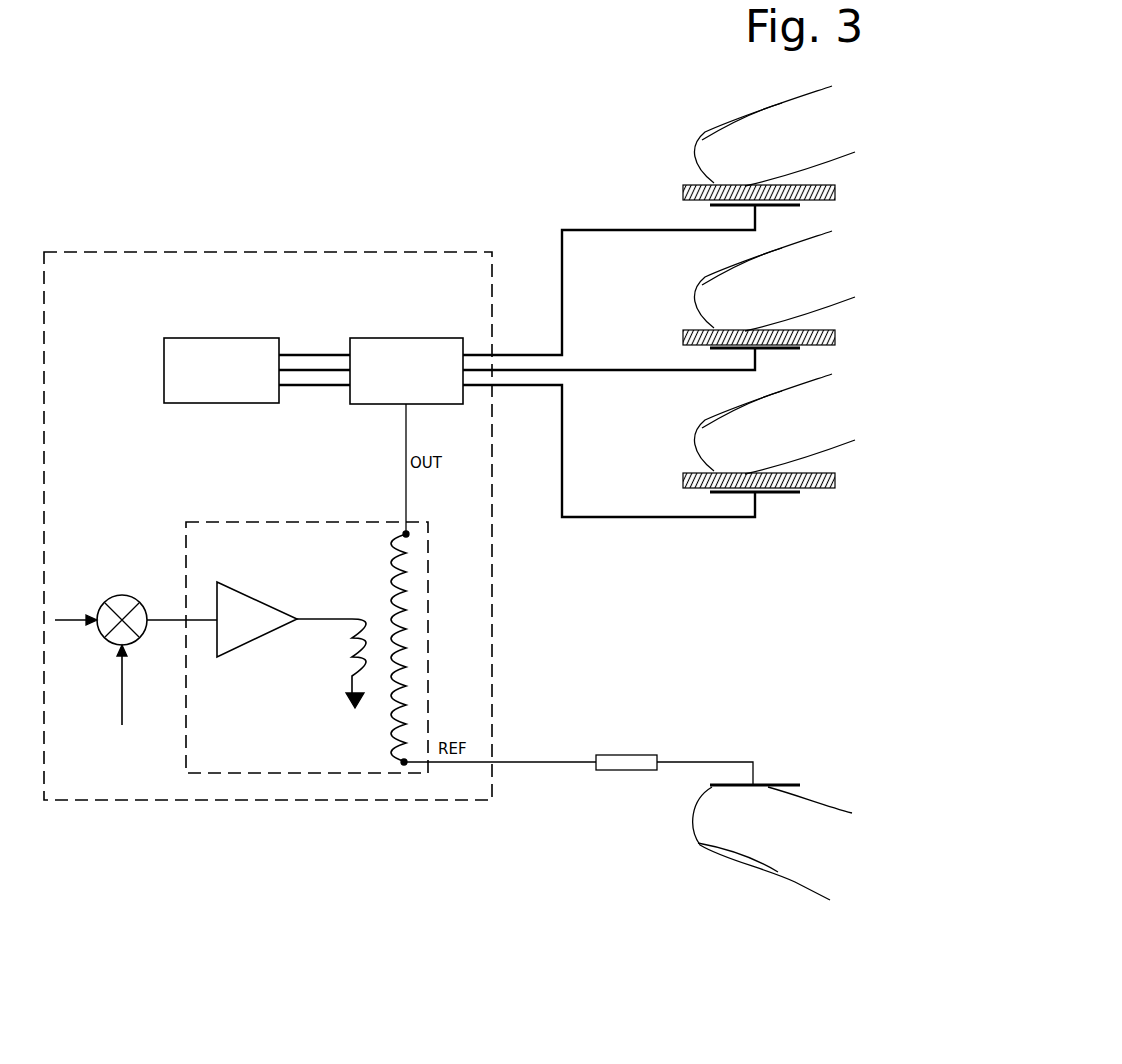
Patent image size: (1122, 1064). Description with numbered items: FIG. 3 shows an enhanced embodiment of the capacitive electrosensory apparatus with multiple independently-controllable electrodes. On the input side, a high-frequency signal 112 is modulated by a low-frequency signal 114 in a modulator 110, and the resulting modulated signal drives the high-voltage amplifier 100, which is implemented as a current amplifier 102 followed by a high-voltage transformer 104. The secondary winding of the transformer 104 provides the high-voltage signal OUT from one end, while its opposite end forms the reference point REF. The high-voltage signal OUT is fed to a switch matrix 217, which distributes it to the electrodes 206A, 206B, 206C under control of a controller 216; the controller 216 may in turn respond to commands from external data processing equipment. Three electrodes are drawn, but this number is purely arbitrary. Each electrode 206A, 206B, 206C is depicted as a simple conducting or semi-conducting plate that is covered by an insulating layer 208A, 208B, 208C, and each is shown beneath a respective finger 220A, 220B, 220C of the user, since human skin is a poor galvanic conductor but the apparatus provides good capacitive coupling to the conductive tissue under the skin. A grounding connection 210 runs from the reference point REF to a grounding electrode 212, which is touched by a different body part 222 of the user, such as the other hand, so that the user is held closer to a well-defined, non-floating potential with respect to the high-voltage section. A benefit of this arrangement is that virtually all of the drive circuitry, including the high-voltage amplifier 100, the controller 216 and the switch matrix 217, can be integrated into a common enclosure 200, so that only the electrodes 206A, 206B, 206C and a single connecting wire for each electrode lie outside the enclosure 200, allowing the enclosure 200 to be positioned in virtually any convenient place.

The high-voltage amplifier 100 is at (296, 518).
The current amplifier 102 is at (262, 598).
The high-voltage transformer 104 is at (352, 617).
The modulator 110 is at (126, 596).
The high-frequency signal 112 is at (70, 614).
The low-frequency signal 114 is at (120, 692).
The common enclosure 200 is at (262, 250).
The electrode 206A is at (712, 206).
The electrode 206B is at (712, 349).
The electrode 206C is at (712, 493).
The dielectric layer 208A is at (700, 182).
The dielectric layer 208B is at (700, 327).
The dielectric layer 208C is at (700, 471).
The grounding connection 210 is at (742, 732).
The grounding electrode 212 is at (800, 780).
The controller 216 is at (221, 336).
The switch matrix 217 is at (410, 336).
The finger 220A is at (774, 136).
The finger 220B is at (774, 281).
The finger 220C is at (774, 424).
The body part 222 is at (772, 843).